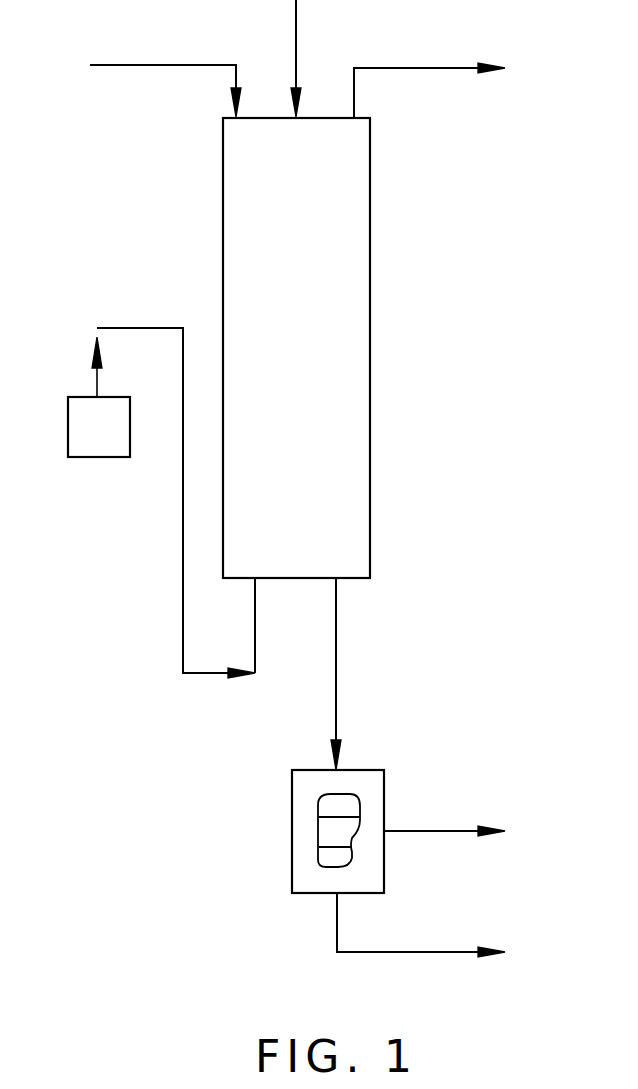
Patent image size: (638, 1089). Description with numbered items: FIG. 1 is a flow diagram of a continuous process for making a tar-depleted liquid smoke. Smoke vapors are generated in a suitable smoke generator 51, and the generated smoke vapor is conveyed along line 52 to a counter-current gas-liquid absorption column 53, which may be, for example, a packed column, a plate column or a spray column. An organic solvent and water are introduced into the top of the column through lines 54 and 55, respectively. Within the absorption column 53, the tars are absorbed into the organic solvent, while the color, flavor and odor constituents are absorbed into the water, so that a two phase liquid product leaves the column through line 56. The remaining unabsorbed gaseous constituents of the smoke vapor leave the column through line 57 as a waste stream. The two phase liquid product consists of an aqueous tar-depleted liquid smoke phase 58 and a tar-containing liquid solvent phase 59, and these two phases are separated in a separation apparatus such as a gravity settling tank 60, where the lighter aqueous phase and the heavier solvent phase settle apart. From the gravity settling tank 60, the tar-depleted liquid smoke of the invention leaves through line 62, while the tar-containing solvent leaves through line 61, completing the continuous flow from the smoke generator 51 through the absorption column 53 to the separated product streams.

The smoke generator 51 is at (68, 437).
The line 52 is at (183, 371).
The counter-current gas-liquid absorption column 53 is at (371, 282).
The line 54 is at (160, 66).
The line 55 is at (298, 32).
The line 56 is at (338, 678).
The line 57 is at (386, 67).
The aqueous tar-depleted liquid smoke phase 58 is at (325, 828).
The tar-containing liquid solvent phase 59 is at (330, 856).
The gravity settling tank 60 is at (385, 793).
The line 61 is at (409, 930).
The line 62 is at (410, 832).